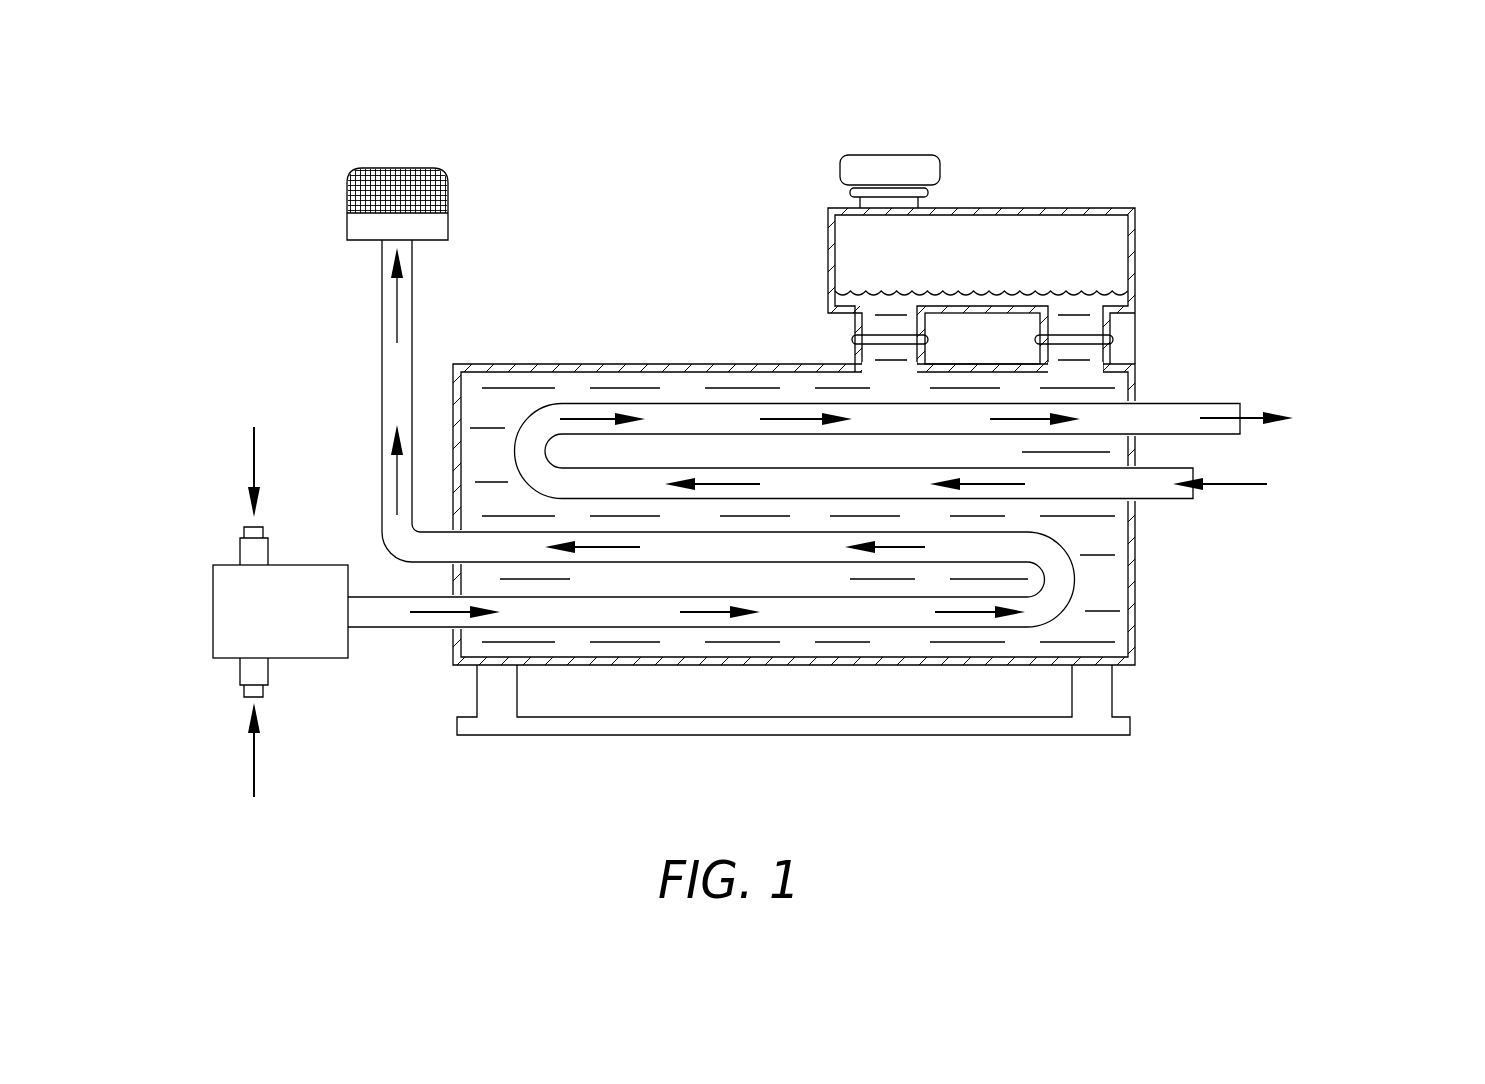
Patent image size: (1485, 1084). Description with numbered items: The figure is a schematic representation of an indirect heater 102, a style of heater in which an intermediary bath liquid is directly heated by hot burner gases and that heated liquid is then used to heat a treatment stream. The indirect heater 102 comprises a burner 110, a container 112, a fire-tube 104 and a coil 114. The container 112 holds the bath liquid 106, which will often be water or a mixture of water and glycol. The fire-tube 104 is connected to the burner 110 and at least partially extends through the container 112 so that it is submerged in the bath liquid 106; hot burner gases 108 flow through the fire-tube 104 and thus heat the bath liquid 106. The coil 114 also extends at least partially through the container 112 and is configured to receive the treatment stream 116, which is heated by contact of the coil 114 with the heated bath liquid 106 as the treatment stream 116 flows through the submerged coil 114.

The indirect heater 102 is at (1262, 138).
The fire-tube 104 is at (905, 627).
The bath liquid 106 is at (1103, 578).
The hot burner gases 108 is at (430, 618).
The burner 110 is at (213, 598).
The container 112 is at (593, 365).
The coil 114 is at (1193, 403).
The treatment stream 116 is at (795, 418).